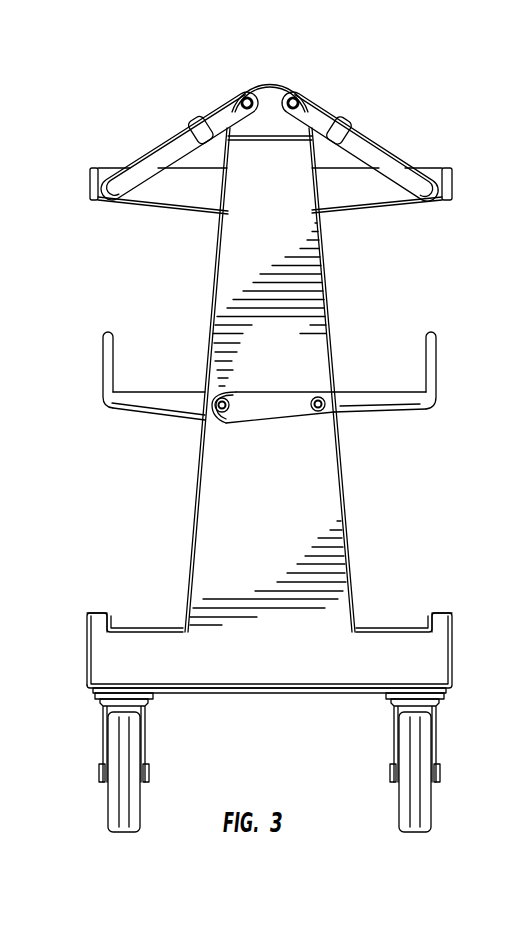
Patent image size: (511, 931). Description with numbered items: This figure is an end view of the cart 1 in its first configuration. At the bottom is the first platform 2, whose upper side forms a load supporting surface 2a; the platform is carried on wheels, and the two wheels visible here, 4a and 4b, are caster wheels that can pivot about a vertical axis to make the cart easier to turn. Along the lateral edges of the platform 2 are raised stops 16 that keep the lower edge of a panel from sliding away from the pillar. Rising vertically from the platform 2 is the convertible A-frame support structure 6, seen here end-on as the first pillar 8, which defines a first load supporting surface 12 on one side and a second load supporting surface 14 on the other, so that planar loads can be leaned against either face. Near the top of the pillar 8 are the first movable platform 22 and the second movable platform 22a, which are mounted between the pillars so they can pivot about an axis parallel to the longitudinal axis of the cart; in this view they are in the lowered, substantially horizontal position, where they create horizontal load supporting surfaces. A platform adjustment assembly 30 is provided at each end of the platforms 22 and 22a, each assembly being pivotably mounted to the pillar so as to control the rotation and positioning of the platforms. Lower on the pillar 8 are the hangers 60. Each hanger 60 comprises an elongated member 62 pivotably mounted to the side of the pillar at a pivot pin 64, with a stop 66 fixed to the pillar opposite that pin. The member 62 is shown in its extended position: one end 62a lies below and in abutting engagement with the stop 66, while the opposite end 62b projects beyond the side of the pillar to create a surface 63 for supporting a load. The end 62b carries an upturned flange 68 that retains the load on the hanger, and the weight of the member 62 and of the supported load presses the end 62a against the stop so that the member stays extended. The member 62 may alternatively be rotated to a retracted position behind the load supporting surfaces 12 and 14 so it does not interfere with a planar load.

The cart 1 is at (443, 133).
The first platform 2 is at (318, 684).
The load supporting surface 2a is at (402, 630).
The caster wheel 4a is at (138, 812).
The caster wheel 4b is at (430, 812).
The convertible A-frame support structure 6 is at (174, 494).
The first pillar 8 is at (362, 553).
The first load supporting surface 12 is at (193, 552).
The second load supporting surface 14 is at (347, 505).
The raised stop 16 is at (100, 612).
The first movable platform 22 is at (90, 198).
The second movable platform 22a is at (452, 199).
The platform adjustment assembly 30 is at (97, 147).
The hanger 60 is at (108, 431).
The elongated member 62 is at (163, 413).
The end of elongated member 62a is at (217, 426).
The opposite end of elongated member 62b is at (412, 412).
The surface 63 is at (158, 390).
The pivot pin 64 is at (316, 396).
The stop 66 is at (225, 398).
The upturned flange 68 is at (103, 336).